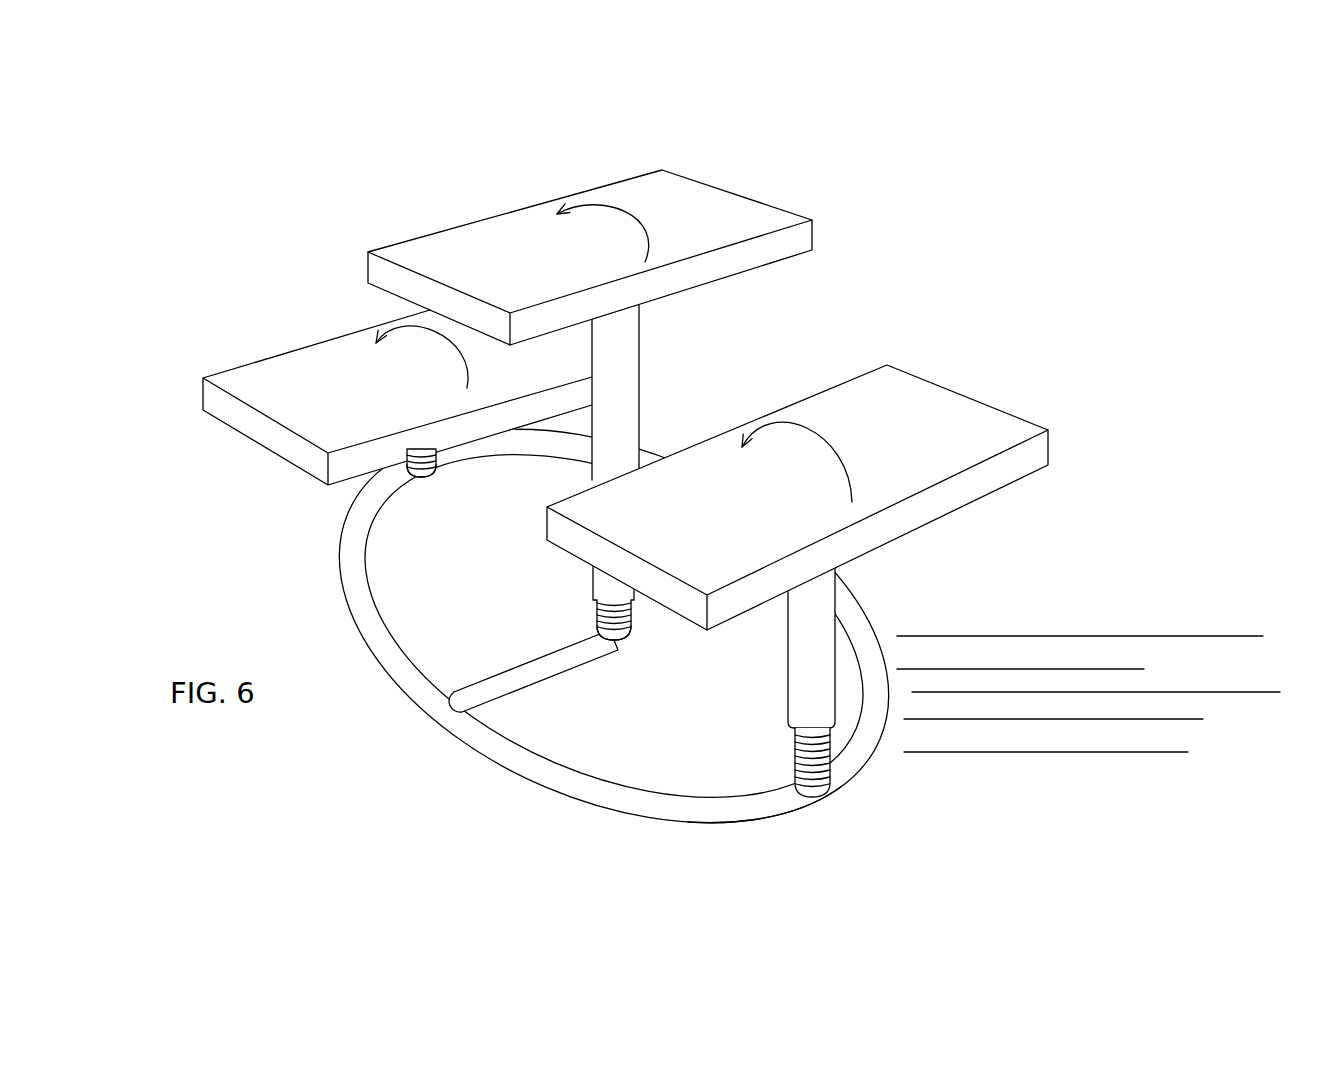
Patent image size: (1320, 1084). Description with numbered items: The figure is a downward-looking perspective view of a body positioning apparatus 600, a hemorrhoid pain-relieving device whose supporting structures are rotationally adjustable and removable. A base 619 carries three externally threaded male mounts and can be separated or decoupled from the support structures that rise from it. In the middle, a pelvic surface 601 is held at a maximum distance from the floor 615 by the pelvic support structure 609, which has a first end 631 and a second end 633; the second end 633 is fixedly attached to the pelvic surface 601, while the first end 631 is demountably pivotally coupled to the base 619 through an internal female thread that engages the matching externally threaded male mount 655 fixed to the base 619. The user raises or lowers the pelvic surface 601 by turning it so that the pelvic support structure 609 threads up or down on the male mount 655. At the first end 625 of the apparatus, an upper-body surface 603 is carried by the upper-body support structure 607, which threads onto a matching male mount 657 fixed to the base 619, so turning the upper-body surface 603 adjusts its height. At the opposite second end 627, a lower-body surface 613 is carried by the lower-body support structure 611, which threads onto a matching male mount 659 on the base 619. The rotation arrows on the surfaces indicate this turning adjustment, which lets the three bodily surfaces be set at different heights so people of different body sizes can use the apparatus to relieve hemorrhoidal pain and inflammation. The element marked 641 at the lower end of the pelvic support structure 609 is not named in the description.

The body positioning apparatus 600 is at (1043, 201).
The pelvic surface 601 is at (713, 207).
The upper-body surface 603 is at (304, 385).
The upper-body support structure 607 is at (425, 446).
The pelvic support structure 609 is at (628, 387).
The lower-body support structure 611 is at (825, 627).
The lower-body surface 613 is at (898, 408).
The floor 615 is at (1065, 716).
The base 619 is at (420, 690).
The first end 625 is at (303, 524).
The second end 627 is at (783, 836).
The first end 631 is at (565, 596).
The second end 633 is at (664, 318).
The post end 641 is at (623, 636).
The externally threaded male mount 655 is at (593, 628).
The externally threaded male mount 657 is at (425, 476).
The externally threaded male mount 659 is at (825, 800).